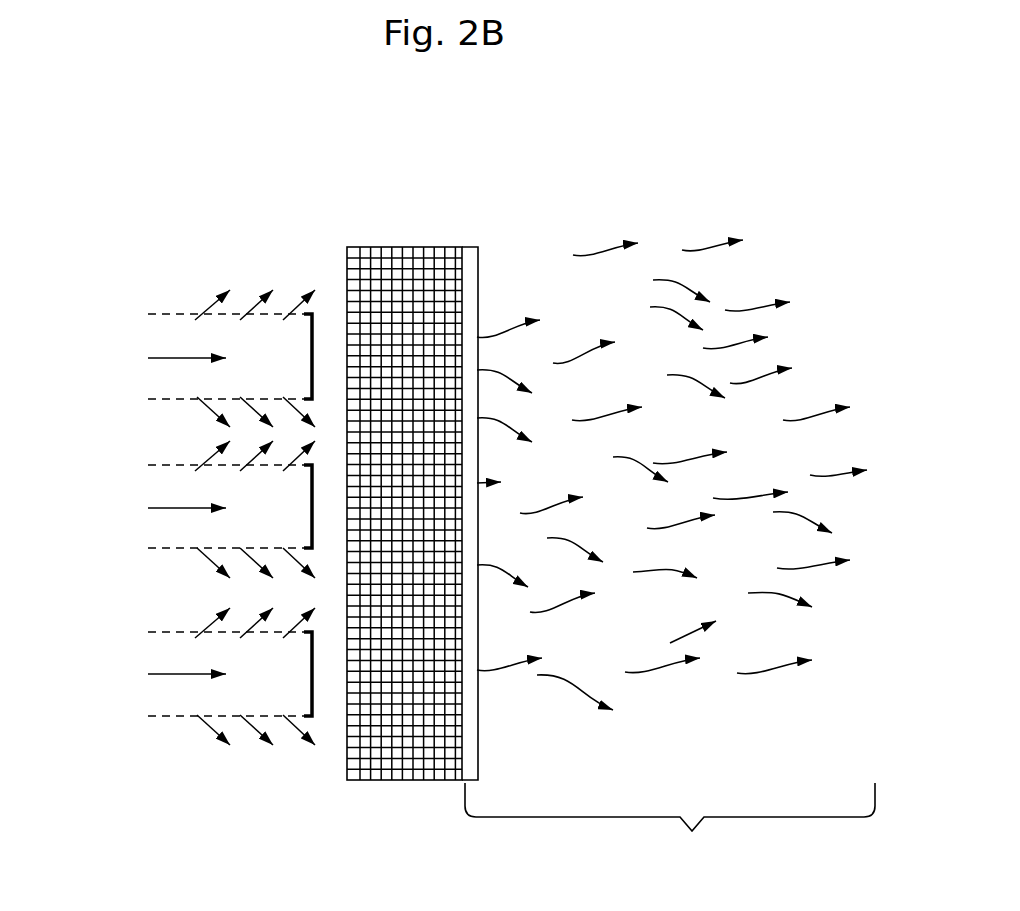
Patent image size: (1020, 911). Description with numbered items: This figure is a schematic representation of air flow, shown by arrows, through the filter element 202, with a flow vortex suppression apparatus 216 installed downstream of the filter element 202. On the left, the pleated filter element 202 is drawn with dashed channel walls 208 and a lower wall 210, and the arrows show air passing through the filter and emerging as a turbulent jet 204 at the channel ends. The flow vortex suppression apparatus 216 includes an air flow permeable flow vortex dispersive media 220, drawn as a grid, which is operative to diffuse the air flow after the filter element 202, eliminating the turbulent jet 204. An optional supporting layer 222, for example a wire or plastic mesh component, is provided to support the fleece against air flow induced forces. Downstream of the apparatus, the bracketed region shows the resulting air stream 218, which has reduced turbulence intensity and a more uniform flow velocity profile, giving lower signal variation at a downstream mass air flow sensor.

The filter element 202 is at (216, 238).
The turbulent jet 204 is at (314, 766).
The inlet channel 208 is at (172, 304).
The channel wall 210 is at (146, 558).
The flow vortex suppression apparatus 216 is at (374, 799).
The air stream 218 is at (670, 554).
The flow vortex dispersive media 220 is at (397, 278).
The supporting layer 222 is at (478, 770).